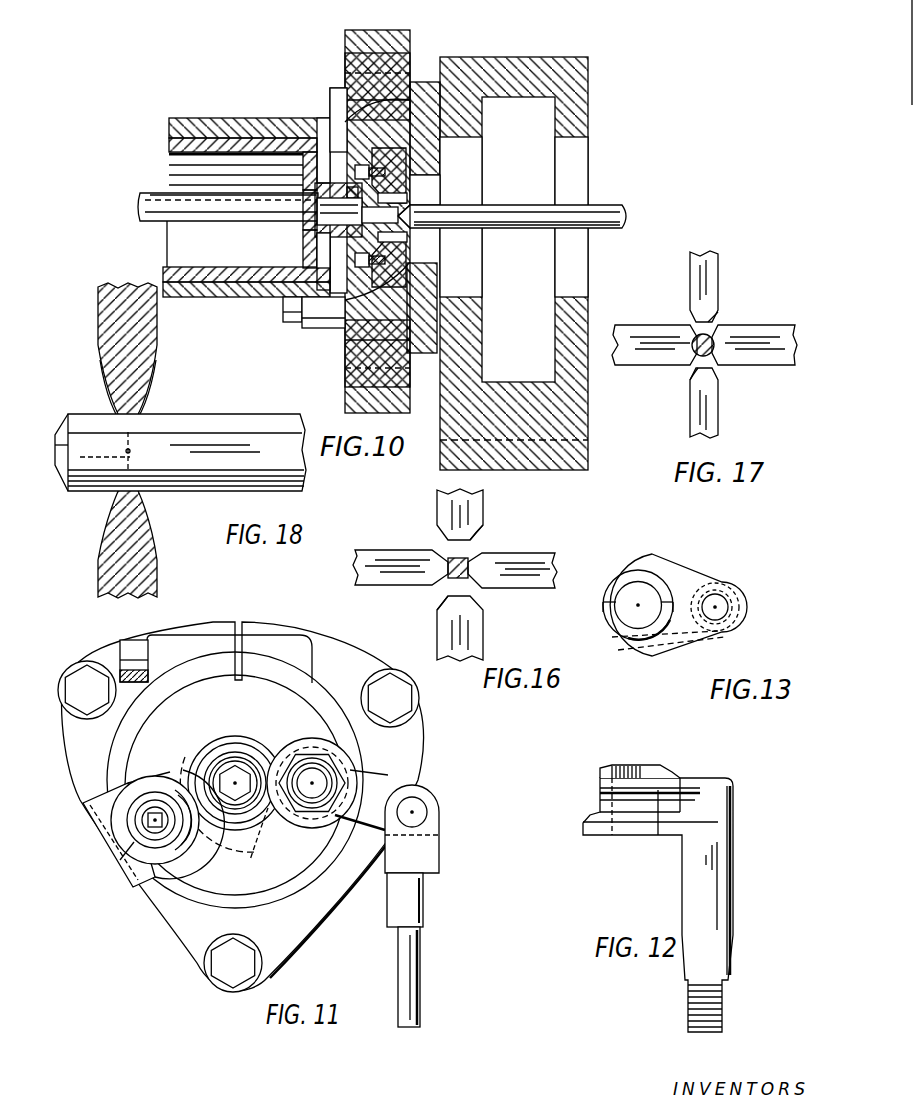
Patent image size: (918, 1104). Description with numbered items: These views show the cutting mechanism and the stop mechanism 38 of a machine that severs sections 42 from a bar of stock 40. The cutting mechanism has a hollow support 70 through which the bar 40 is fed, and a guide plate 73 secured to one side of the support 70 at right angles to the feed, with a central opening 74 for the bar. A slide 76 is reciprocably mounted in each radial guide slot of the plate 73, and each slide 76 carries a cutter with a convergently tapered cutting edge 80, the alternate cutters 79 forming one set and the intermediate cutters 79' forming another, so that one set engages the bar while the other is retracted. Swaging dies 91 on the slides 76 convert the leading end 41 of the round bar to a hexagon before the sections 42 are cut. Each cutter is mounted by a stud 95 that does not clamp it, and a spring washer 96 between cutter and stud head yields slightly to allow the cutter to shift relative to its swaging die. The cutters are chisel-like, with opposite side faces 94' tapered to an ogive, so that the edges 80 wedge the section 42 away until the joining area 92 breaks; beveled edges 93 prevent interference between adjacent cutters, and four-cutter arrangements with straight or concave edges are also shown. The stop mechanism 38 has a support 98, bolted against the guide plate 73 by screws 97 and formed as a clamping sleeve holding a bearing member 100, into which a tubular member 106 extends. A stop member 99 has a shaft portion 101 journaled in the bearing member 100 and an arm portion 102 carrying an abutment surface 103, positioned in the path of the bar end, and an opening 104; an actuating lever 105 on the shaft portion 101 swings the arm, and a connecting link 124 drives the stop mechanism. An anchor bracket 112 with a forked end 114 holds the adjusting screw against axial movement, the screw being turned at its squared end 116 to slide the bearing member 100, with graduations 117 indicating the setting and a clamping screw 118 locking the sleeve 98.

In FIG. 10, the stop mechanism 38 is at (258, 118).
In FIG. 11, the stop mechanism 38 is at (285, 628).
In FIG. 10, the bar of stock 40 is at (600, 207).
In FIG. 18, the bar of stock 40 is at (212, 428).
In FIG. 17, the bar of stock 40 is at (695, 335).
In FIG. 10, the leading end 41 is at (380, 213).
In FIG. 18, the section 42 is at (62, 470).
In FIG. 11, the section 42 is at (232, 780).
In FIG. 10, the support 70 is at (468, 356).
In FIG. 10, the guide plate 73 is at (416, 85).
In FIG. 10, the central opening 74 is at (440, 187).
In FIG. 10, the slide 76 is at (380, 123).
In FIG. 10, the cutter 79 is at (369, 217).
In FIG. 18, the cutter 79 is at (146, 440).
In FIG. 17, the cutter 79 is at (704, 359).
In FIG. 16, the cutter 79 is at (479, 574).
In FIG. 17, the cutter 79' is at (729, 344).
In FIG. 16, the cutter 79' is at (455, 580).
In FIG. 10, the cutting edge 80 is at (405, 215).
In FIG. 18, the cutting edge 80 is at (135, 437).
In FIG. 17, the cutting edge 80 is at (712, 325).
In FIG. 16, the cutting edge 80 is at (476, 535).
In FIG. 10, the swaging die 91 is at (405, 198).
In FIG. 18, the broken area 92 is at (105, 451).
In FIG. 16, the bevel 93 is at (470, 554).
In FIG. 18, the side faces 94' is at (131, 438).
In FIG. 10, the stud 95 is at (318, 261).
In FIG. 10, the spring washer 96 is at (330, 307).
In FIG. 10, the screw 97 is at (284, 313).
In FIG. 11, the screw 97 is at (78, 703).
In FIG. 10, the support 98 is at (176, 118).
In FIG. 11, the support 98 is at (410, 743).
In FIG. 13, the stop member 99 is at (740, 622).
In FIG. 12, the stop member 99 is at (736, 815).
In FIG. 11, the stop member 99 is at (306, 749).
In FIG. 10, the bearing member 100 is at (170, 140).
In FIG. 11, the bearing member 100 is at (296, 841).
In FIG. 13, the shaft portion 101 is at (735, 638).
In FIG. 12, the shaft portion 101 is at (720, 887).
In FIG. 11, the shaft portion 101 is at (328, 782).
In FIG. 13, the arm portion 102 is at (700, 645).
In FIG. 12, the arm portion 102 is at (682, 781).
In FIG. 11, the arm portion 102 is at (268, 813).
In FIG. 10, the abutment surface 103 is at (312, 232).
In FIG. 13, the abutment surface 103 is at (612, 650).
In FIG. 12, the abutment surface 103 is at (646, 766).
In FIG. 11, the abutment surface 103 is at (275, 731).
In FIG. 10, the opening 104 is at (318, 202).
In FIG. 13, the opening 104 is at (645, 592).
In FIG. 12, the opening 104 is at (600, 806).
In FIG. 11, the actuating lever 105 is at (414, 780).
In FIG. 10, the tubular member 106 is at (160, 193).
In FIG. 11, the anchor bracket 112 is at (92, 815).
In FIG. 11, the forked end 114 is at (140, 896).
In FIG. 11, the squared end 116 is at (188, 833).
In FIG. 11, the graduations 117 is at (134, 843).
In FIG. 11, the clamping screw 118 is at (143, 645).
In FIG. 11, the connecting link 124 is at (420, 993).